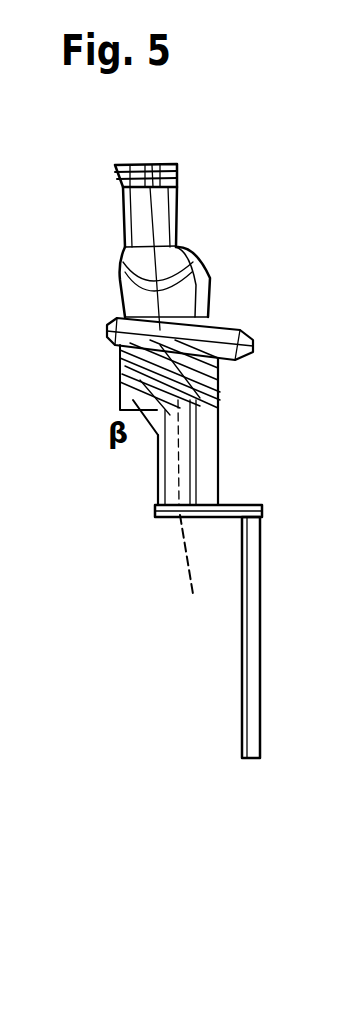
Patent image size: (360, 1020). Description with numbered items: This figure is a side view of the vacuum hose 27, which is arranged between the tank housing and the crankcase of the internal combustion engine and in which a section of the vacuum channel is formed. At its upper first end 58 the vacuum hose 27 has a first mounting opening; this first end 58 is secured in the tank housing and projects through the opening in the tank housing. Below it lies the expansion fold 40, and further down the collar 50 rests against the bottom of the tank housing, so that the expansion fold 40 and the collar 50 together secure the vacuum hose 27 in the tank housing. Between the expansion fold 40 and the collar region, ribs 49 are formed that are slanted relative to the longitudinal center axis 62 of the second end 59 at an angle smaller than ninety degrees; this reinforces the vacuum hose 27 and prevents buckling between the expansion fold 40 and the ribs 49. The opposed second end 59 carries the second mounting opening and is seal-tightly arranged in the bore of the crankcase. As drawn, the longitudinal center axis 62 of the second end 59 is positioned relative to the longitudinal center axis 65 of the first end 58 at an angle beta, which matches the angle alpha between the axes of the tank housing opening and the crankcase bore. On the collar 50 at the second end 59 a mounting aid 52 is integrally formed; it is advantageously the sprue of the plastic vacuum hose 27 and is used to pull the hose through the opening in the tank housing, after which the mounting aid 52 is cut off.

The vacuum hose 27 is at (224, 158).
The first end 58 is at (130, 163).
The longitudinal center axis of the first end 65 is at (147, 160).
The expansion fold 40 is at (233, 333).
The ribs 49 is at (135, 372).
The collar 50 is at (238, 505).
The second end 59 is at (157, 506).
The longitudinal center axis of the second end 62 is at (179, 545).
The mounting aid 52 is at (252, 658).